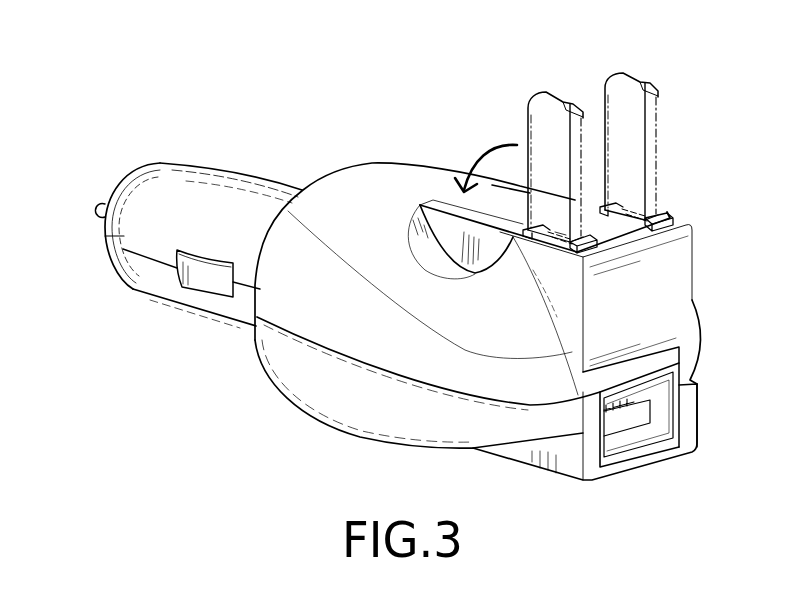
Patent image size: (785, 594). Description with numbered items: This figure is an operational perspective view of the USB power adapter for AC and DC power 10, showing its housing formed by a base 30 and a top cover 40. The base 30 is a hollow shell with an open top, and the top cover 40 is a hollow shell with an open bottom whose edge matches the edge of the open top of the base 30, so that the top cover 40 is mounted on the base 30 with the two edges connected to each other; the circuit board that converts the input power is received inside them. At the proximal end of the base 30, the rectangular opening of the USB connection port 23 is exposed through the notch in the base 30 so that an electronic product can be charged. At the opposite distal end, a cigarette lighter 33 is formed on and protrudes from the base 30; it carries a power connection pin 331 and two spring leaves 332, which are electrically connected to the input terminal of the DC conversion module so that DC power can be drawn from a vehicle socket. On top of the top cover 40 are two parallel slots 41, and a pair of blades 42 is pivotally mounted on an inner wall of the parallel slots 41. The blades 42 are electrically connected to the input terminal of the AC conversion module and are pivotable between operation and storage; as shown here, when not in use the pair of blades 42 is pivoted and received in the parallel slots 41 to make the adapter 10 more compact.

The USB power adapter for AC and DC power 10 is at (326, 95).
The USB connection port 23 is at (627, 437).
The base 30 is at (340, 407).
The cigarette lighter 33 is at (220, 315).
The power connection pin 331 is at (99, 203).
The spring leaves 332 is at (188, 282).
The top cover 40 is at (680, 291).
The parallel slots 41 is at (453, 210).
The blades 42 is at (458, 244).